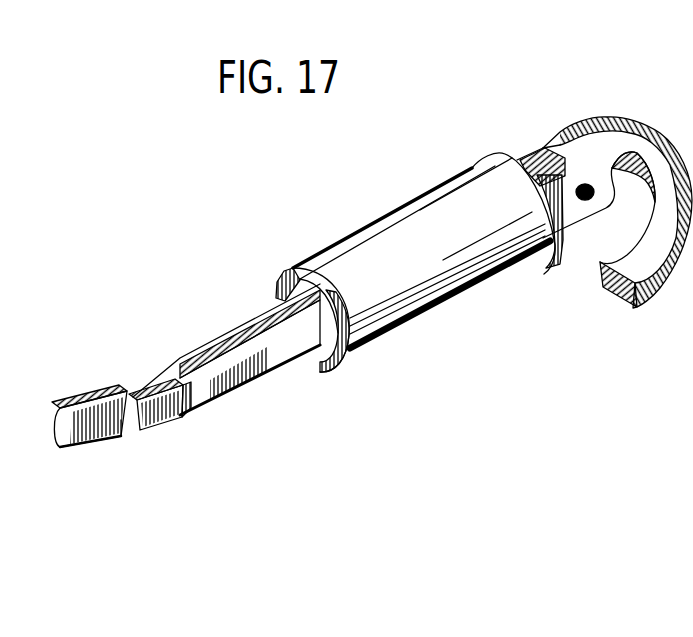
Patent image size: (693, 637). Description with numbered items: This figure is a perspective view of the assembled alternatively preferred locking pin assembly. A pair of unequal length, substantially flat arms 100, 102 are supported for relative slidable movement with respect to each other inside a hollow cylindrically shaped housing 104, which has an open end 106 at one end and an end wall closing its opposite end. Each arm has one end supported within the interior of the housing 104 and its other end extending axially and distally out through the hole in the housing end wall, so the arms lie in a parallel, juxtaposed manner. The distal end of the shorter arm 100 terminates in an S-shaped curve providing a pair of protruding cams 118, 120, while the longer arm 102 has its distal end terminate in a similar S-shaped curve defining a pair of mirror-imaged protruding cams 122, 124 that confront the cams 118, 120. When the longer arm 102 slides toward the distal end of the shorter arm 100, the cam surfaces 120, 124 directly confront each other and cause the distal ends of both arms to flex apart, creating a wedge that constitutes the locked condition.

The arm 100 is at (240, 325).
The arm 102 is at (275, 350).
The housing 104 is at (468, 188).
The open end 106 is at (565, 232).
The protruding cam 118 is at (75, 413).
The protruding cam 120 is at (126, 432).
The protruding cam 122 is at (181, 430).
The protruding cam 124 is at (177, 368).